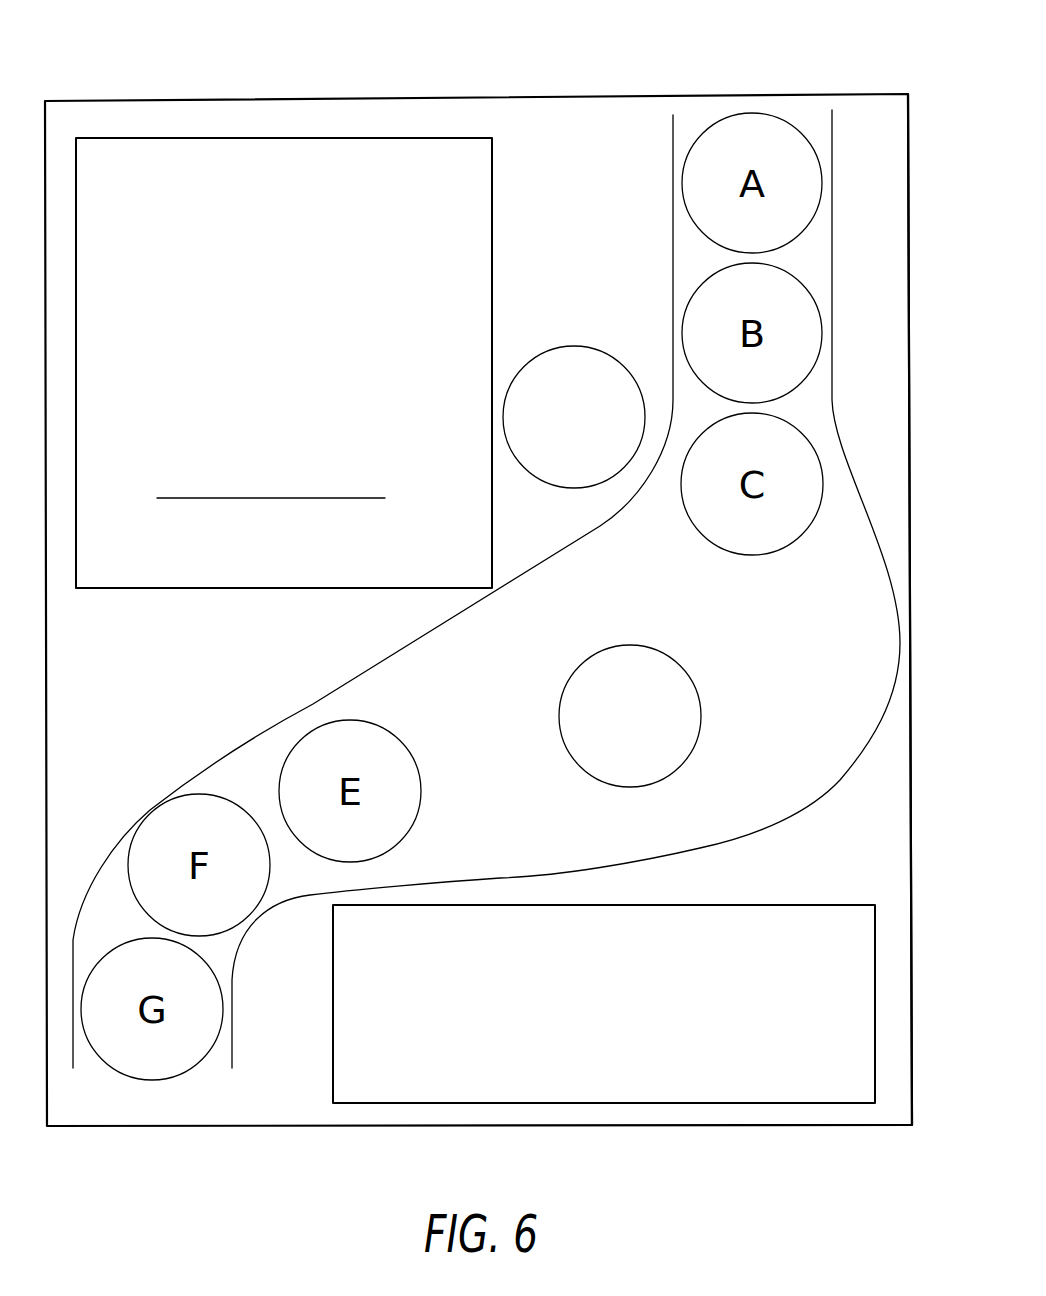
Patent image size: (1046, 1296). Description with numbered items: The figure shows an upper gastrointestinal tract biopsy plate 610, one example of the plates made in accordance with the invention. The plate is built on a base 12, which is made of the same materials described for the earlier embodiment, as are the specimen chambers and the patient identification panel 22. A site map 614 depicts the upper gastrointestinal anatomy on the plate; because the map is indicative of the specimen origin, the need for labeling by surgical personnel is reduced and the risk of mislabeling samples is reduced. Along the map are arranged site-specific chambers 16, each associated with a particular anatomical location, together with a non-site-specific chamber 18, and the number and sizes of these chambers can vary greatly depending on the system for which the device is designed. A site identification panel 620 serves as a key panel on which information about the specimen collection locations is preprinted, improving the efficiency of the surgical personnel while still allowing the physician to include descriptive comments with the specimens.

The upper gastrointestinal tract biopsy plate 610 is at (836, 82).
The base 12 is at (895, 466).
The site map 614 is at (772, 812).
The non-site-specific chamber 18 is at (574, 358).
The site-specific chamber 16 is at (685, 698).
The site identification panel 620 is at (298, 580).
The patient identification panel 22 is at (722, 1088).